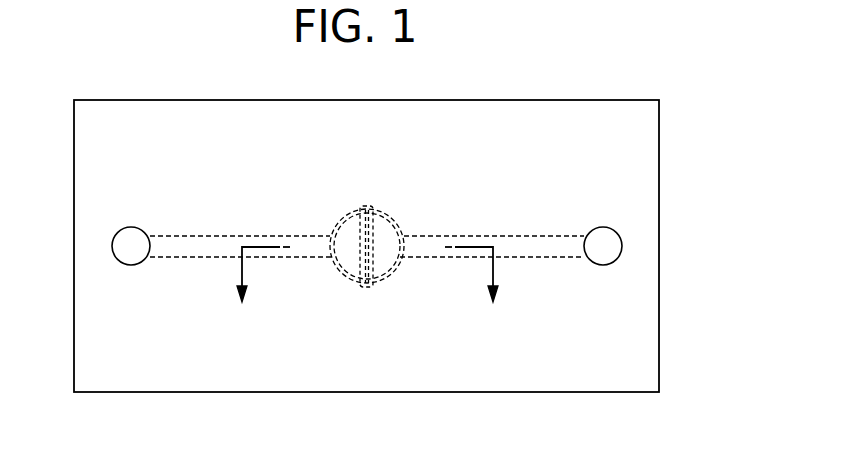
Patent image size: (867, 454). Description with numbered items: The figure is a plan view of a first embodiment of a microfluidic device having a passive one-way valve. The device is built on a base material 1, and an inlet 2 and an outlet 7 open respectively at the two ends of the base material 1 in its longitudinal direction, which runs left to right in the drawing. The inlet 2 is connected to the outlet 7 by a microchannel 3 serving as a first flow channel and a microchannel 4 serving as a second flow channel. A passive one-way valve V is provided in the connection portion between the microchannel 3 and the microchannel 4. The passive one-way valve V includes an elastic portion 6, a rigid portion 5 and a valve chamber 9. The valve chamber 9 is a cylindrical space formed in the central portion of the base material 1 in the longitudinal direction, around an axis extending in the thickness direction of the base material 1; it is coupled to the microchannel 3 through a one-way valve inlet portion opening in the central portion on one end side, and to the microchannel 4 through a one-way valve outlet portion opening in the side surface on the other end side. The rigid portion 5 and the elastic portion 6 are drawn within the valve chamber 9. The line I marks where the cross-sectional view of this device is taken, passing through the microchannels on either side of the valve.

The base material 1 is at (645, 155).
The inlet 2 is at (130, 238).
The microchannel 3 is at (222, 236).
The microchannel 4 is at (537, 243).
The rigid portion 5 is at (369, 207).
The elastic portion 6 is at (383, 263).
The outlet 7 is at (603, 237).
The valve chamber 9 is at (350, 213).
The passive one-way valve V is at (388, 215).
The line I- I is at (367, 292).